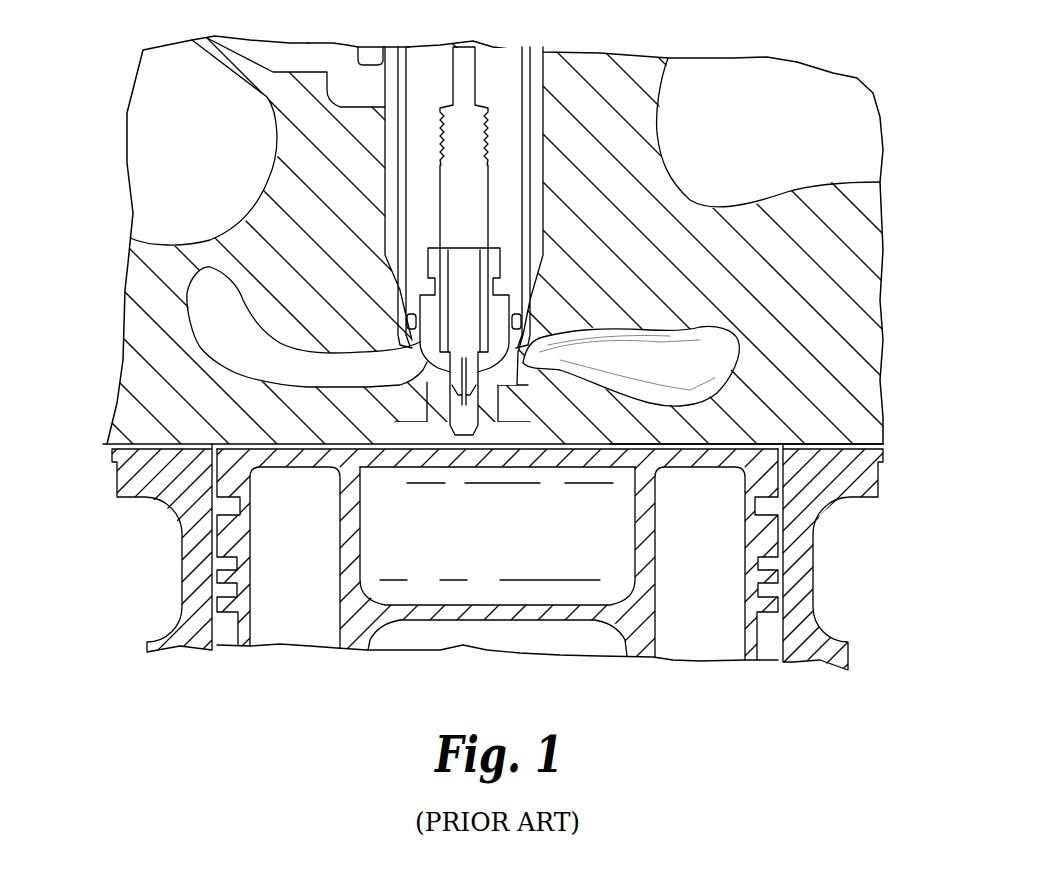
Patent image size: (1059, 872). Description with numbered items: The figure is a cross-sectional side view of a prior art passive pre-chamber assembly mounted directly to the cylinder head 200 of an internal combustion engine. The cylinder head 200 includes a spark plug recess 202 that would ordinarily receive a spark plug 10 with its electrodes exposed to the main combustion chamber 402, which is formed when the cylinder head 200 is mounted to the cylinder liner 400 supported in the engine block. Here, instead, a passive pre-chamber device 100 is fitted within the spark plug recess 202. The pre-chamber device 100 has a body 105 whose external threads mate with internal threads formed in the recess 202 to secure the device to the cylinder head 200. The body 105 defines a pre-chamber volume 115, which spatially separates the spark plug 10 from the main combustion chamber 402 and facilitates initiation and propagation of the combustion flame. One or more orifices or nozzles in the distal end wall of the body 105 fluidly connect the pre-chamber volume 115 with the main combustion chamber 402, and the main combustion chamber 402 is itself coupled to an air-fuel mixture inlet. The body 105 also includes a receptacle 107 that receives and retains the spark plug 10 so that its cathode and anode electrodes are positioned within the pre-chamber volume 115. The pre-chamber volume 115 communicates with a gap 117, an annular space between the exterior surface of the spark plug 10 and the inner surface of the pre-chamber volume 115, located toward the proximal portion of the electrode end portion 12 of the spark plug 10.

The spark plug 10 is at (448, 188).
The electrode end portion 12 is at (280, 388).
The passive pre-chamber device 100 is at (445, 408).
The body 105 is at (427, 335).
The receptacle 107 is at (493, 312).
The pre-chamber volume 115 is at (385, 521).
The gap 117 is at (530, 428).
The cylinder head 200 is at (770, 281).
The spark plug recess 202 is at (492, 88).
The cylinder liner 400 is at (833, 648).
The main combustion chamber 402 is at (463, 557).